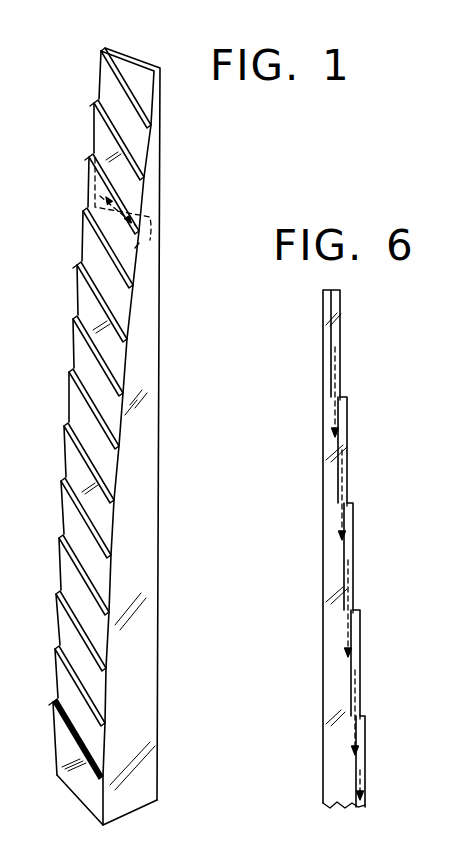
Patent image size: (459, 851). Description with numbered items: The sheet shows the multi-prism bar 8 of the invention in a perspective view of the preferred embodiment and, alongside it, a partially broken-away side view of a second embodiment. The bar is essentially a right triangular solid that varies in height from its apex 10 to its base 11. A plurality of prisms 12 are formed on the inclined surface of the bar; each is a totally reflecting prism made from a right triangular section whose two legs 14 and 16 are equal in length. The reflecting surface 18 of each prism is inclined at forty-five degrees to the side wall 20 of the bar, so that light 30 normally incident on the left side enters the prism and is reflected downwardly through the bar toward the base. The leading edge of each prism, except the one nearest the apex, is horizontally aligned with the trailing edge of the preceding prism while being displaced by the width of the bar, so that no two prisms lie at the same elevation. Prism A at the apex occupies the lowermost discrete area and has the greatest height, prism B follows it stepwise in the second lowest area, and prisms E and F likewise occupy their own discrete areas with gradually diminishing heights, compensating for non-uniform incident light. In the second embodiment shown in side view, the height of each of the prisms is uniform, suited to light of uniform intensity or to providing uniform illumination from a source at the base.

In FIG. 1, the multi-prism bar 8 is at (57, 627).
In FIG. 1, the apex 10 is at (133, 57).
In FIG. 1, the base 11 is at (137, 808).
In FIG. 1, the prisms 12 is at (148, 208).
In FIG. 6, the prisms 12 is at (340, 368).
In FIG. 1, the leg of the prism 14 is at (88, 181).
In FIG. 1, the leg of the prism 16 is at (150, 254).
In FIG. 1, the reflecting surface 18 is at (93, 151).
In FIG. 6, the reflecting surface 18 is at (337, 303).
In FIG. 1, the side wall 20 is at (145, 577).
In FIG. 6, the light 30 is at (333, 398).
In FIG. 1, the prism A is at (142, 107).
In FIG. 1, the prism B is at (134, 157).
In FIG. 1, the prism E is at (121, 326).
In FIG. 1, the prism F is at (90, 332).